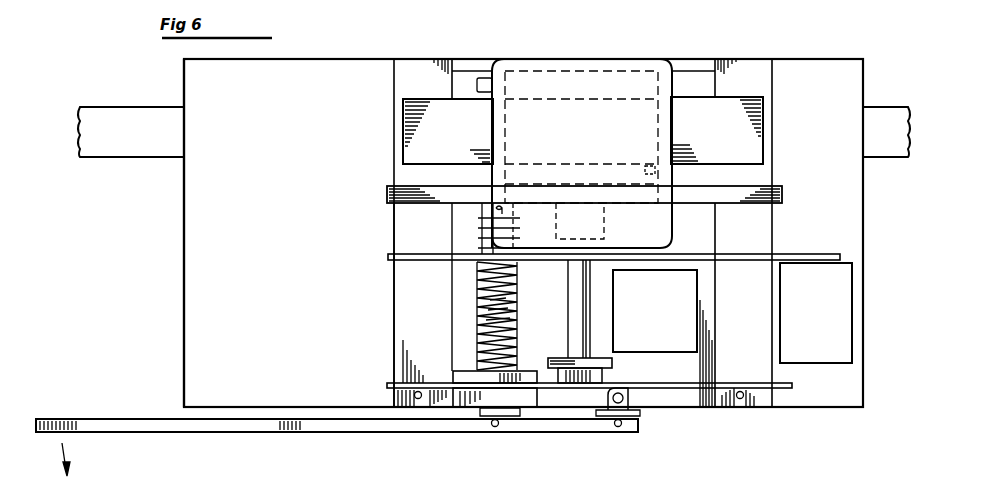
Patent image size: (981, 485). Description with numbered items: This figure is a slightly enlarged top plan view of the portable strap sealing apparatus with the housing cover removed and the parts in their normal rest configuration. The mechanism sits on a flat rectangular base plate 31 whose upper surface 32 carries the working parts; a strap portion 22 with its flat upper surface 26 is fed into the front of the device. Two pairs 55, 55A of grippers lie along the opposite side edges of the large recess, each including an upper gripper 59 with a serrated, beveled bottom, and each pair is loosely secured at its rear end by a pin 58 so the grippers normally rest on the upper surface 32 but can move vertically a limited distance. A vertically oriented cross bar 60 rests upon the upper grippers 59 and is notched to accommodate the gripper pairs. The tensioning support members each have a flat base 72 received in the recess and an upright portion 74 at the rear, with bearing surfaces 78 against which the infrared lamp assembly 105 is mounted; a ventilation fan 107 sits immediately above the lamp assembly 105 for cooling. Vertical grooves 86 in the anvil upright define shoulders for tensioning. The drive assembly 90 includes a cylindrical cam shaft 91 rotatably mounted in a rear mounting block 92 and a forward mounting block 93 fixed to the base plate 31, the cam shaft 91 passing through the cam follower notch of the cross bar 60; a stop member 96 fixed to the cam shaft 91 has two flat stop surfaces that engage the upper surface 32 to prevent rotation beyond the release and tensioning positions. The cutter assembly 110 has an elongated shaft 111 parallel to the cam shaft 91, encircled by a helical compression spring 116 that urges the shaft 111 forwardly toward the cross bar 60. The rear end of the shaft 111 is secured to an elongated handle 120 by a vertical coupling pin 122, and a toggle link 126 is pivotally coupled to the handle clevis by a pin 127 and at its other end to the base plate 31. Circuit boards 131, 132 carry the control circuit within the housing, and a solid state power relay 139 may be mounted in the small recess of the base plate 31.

The strap portion 22 is at (92, 104).
The upper surface 26 is at (142, 135).
The base plate 31 is at (184, 240).
The upper surface 32 is at (250, 295).
The pair of grippers 55 is at (778, 160).
The pair of grippers 55A is at (392, 292).
The pin 58 is at (418, 399).
The upper gripper 59 is at (770, 238).
The cross bar 60 is at (387, 197).
The base 72 is at (468, 72).
The upright portion 74 is at (470, 163).
The bearing surface 78 is at (700, 163).
The vertical groove 86 is at (650, 165).
The drive assembly 90 is at (592, 331).
The cam shaft 91 is at (568, 276).
The rear mounting block 92 is at (603, 373).
The forward mounting block 93 is at (604, 222).
The stop member 96 is at (553, 356).
The infrared lamp assembly 105 is at (403, 114).
The ventilation fan 107 is at (673, 118).
The cutter assembly 110 is at (472, 325).
The shaft 111 is at (477, 300).
The helical compression spring 116 is at (482, 268).
The handle 120 is at (140, 432).
The coupling pin 122 is at (495, 428).
The toggle link 126 is at (624, 398).
The pin 127 is at (618, 428).
The circuit board 131 is at (392, 260).
The circuit board 132 is at (402, 380).
The solid state power relay 139 is at (844, 332).